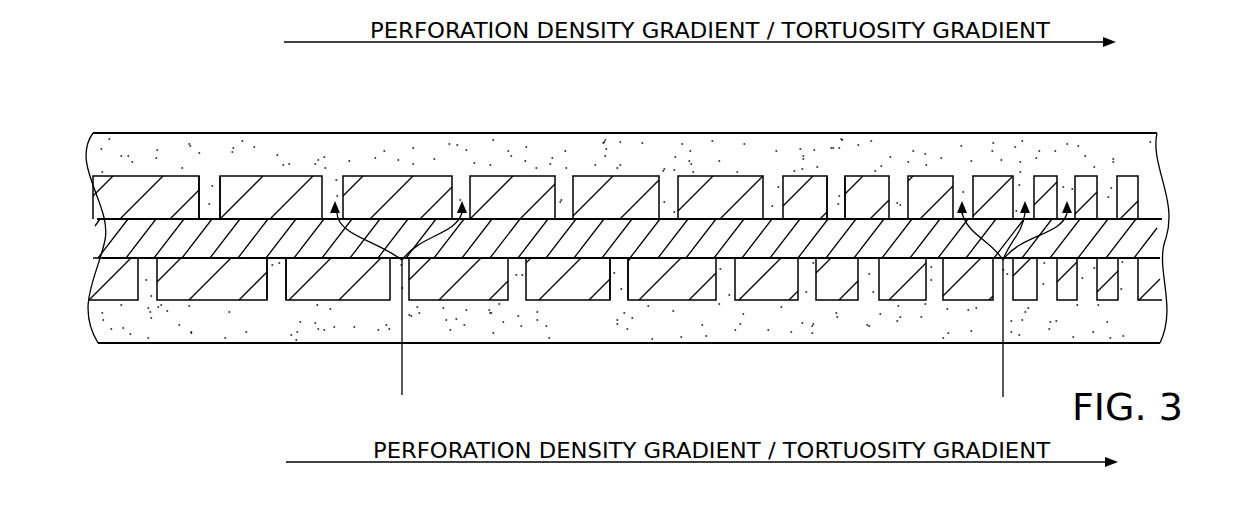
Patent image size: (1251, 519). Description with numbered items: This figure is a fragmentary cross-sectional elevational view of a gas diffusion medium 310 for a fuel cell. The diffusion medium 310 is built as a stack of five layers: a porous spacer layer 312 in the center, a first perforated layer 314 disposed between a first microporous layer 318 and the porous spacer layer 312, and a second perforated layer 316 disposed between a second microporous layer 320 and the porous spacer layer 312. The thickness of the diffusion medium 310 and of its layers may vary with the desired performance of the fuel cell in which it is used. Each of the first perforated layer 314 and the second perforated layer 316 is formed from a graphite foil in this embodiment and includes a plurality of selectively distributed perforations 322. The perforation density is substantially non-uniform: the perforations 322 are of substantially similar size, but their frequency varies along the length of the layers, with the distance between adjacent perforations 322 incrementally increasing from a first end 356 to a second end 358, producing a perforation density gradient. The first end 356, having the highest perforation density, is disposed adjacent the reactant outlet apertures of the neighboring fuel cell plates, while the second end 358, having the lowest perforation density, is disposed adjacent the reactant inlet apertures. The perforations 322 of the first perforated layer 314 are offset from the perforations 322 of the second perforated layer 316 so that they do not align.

The diffusion medium 310 is at (1153, 88).
The porous spacer layer 312 is at (1160, 233).
The first perforated layer 314 is at (1162, 190).
The second perforated layer 316 is at (1140, 283).
The first microporous layer 318 is at (1147, 152).
The second microporous layer 320 is at (1157, 323).
The perforations 322 is at (202, 193).
The first end 356 is at (1076, 114).
The second end 358 is at (99, 114).